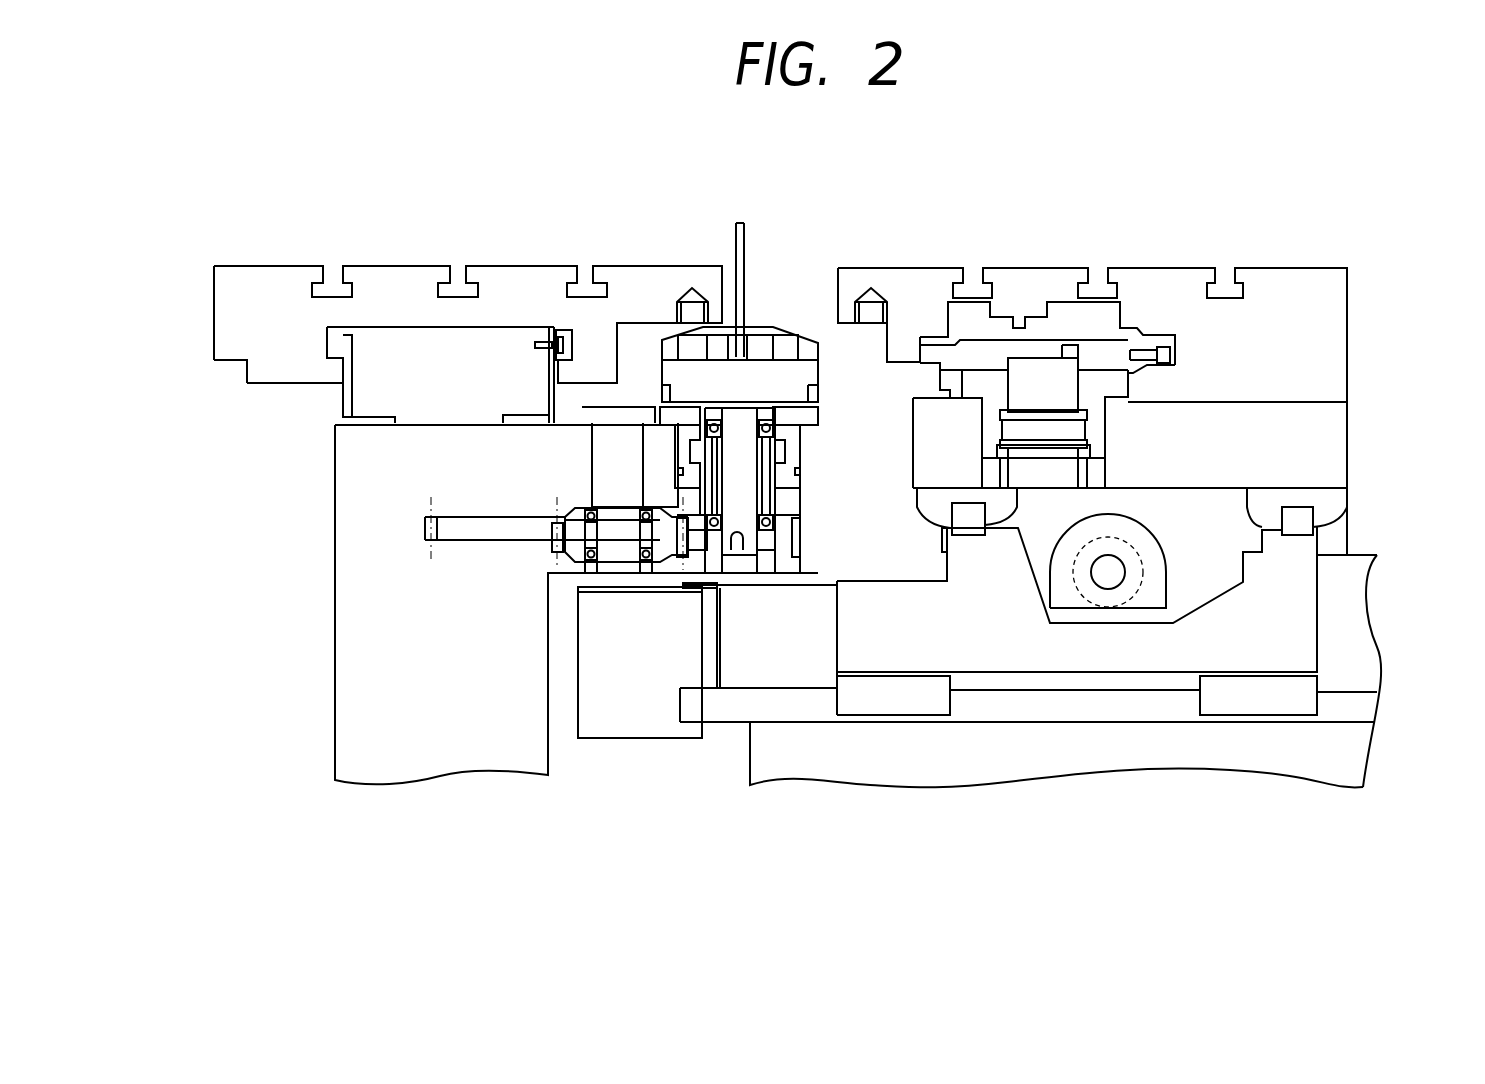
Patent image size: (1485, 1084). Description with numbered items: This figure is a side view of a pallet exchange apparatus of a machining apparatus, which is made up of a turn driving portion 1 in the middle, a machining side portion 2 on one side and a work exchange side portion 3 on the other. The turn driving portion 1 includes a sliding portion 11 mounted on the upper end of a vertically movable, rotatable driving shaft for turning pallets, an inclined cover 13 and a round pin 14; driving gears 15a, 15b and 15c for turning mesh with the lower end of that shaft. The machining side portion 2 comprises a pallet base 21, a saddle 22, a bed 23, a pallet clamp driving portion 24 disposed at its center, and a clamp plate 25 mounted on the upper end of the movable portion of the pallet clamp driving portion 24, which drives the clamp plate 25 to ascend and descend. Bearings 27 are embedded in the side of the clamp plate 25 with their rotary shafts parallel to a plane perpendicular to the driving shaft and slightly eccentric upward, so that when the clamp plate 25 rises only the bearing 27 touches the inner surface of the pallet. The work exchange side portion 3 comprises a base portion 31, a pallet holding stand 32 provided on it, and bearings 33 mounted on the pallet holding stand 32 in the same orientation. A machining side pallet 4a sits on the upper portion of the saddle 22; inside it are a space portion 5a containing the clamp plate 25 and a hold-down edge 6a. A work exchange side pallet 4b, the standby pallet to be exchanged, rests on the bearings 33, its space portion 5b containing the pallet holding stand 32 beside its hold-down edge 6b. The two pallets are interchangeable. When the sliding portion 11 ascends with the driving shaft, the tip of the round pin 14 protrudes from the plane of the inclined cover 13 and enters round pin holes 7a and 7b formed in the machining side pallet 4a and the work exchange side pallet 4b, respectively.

The turn driving portion 1 is at (763, 300).
The machining side portion 2 is at (1003, 262).
The work exchange side portion 3 is at (478, 255).
The machining side pallet 4a is at (1285, 290).
The work exchange side pallet 4b is at (270, 275).
The space portion 5a is at (1058, 312).
The space portion 5b is at (388, 340).
The hold-down edge 6a is at (1143, 378).
The hold-down edge 6b is at (295, 370).
The round pin hole 7a is at (872, 300).
The round pin hole 7b is at (690, 310).
The sliding portion 11 is at (810, 372).
The inclined cover 13 is at (708, 300).
The round pin 14 is at (788, 340).
The driving gear for turning 15a is at (705, 552).
The driving gear for turning 15b is at (575, 548).
The driving gear for turning 15c is at (463, 530).
The pallet base 21 is at (1335, 432).
The saddle 22 is at (1298, 593).
The bed 23 is at (1360, 762).
The pallet clamp driving portion 24 is at (1060, 400).
The clamp plate 25 is at (977, 352).
The bearing 27 is at (1150, 360).
The base portion 31 is at (362, 495).
The pallet holding stand 32 is at (535, 360).
The bearing 33 is at (555, 360).